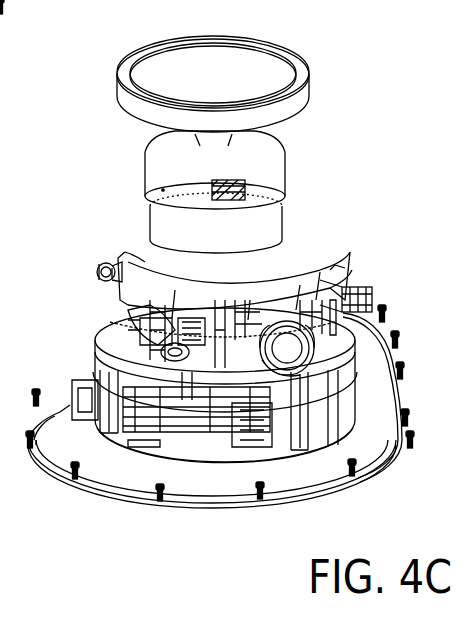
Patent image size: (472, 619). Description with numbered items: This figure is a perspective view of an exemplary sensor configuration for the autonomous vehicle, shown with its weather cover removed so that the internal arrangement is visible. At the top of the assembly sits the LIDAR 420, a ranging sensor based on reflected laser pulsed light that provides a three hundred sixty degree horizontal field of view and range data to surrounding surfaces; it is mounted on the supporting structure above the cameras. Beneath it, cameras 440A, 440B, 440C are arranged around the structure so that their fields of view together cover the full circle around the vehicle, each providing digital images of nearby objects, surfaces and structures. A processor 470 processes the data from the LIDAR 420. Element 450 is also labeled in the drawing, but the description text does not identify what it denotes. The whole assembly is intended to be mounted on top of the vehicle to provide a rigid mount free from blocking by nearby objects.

The LIDAR 420 is at (276, 200).
The camera 440A is at (104, 310).
The camera 440B is at (365, 292).
The camera 440C is at (108, 270).
The lens 450 is at (306, 370).
The processor 470 is at (280, 402).